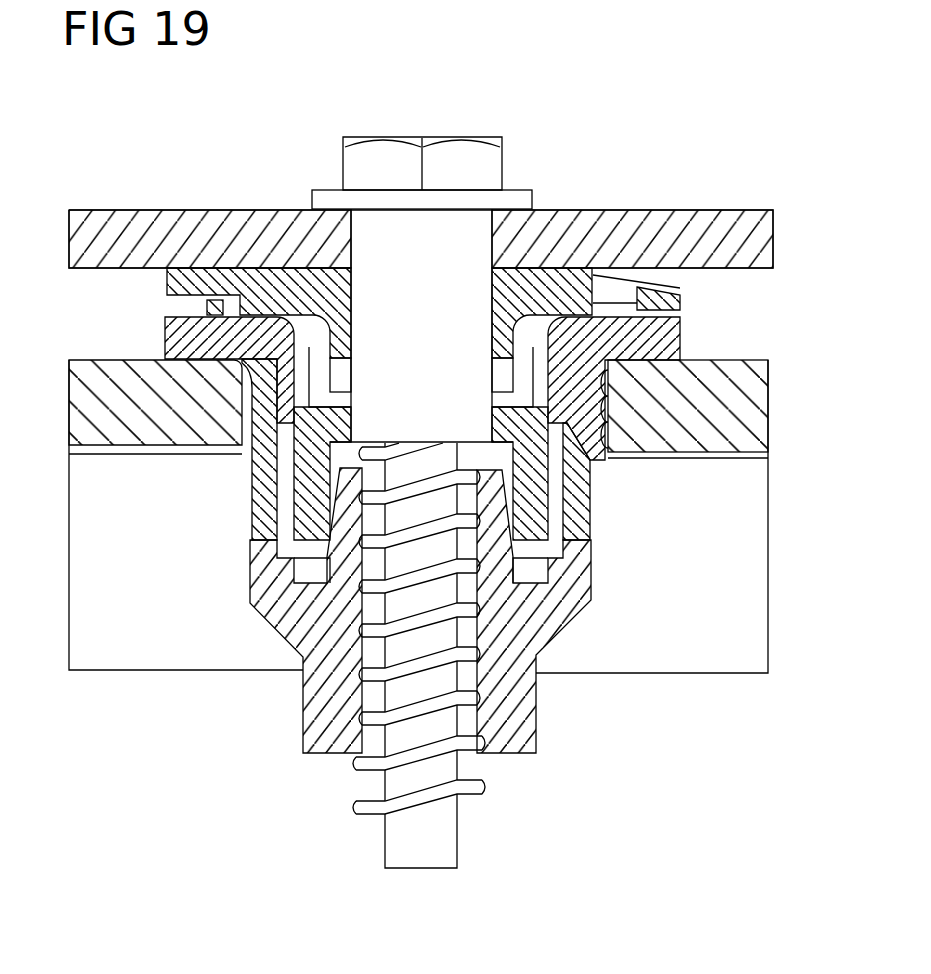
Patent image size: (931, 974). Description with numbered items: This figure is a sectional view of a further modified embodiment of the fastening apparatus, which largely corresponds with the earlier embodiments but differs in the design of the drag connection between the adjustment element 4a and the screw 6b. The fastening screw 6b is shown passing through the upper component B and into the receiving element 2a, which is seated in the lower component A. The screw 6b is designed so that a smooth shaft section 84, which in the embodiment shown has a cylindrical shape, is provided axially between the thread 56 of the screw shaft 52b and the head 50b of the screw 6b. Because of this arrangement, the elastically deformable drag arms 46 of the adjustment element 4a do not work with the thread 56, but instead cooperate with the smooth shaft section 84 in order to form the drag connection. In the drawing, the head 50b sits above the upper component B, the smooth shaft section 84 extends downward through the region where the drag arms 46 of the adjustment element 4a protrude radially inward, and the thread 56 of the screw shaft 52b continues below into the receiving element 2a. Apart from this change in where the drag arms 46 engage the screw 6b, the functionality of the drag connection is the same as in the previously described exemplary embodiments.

The fastening screw 6b is at (411, 232).
The head 50b is at (397, 160).
The smooth shaft section 84 is at (387, 230).
The upper component plate B is at (758, 242).
The lower component plate A is at (748, 405).
The adjustment element 4a is at (150, 299).
The drag arms 46 is at (688, 358).
The receiving element 2a is at (290, 728).
The thread 56 is at (472, 782).
The screw shaft 52b is at (422, 848).